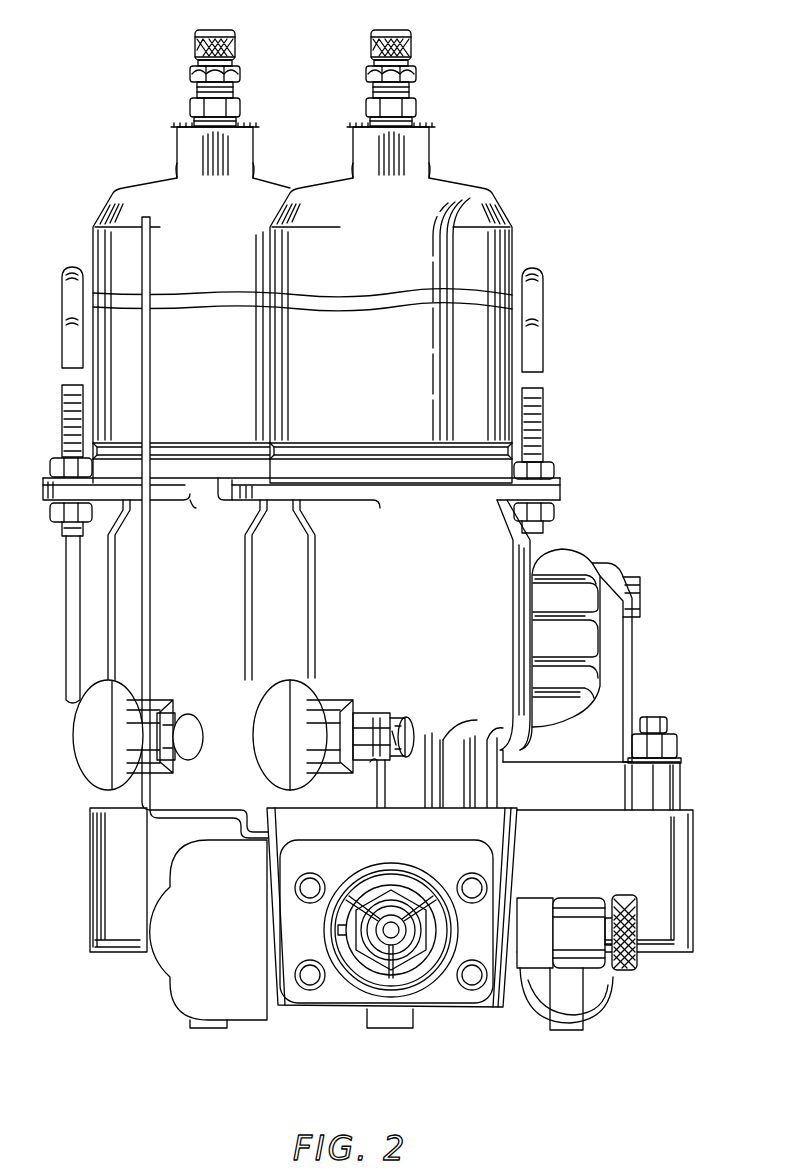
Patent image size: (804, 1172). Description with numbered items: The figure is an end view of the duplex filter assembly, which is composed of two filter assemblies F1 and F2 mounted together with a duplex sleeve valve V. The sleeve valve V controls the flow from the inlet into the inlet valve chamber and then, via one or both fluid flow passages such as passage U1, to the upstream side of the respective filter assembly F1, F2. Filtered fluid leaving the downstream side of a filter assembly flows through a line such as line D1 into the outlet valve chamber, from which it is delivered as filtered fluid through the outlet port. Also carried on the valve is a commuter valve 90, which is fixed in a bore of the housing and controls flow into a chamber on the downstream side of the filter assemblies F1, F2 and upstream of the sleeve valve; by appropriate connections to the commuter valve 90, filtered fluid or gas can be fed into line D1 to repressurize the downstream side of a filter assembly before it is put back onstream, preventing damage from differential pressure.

The filter assembly F1 is at (505, 212).
The filter assembly F2 is at (100, 210).
The fluid flow passage U1 is at (558, 563).
The line D1 is at (383, 796).
The duplex sleeve valve V is at (332, 1015).
The commuter valve 90 is at (634, 978).